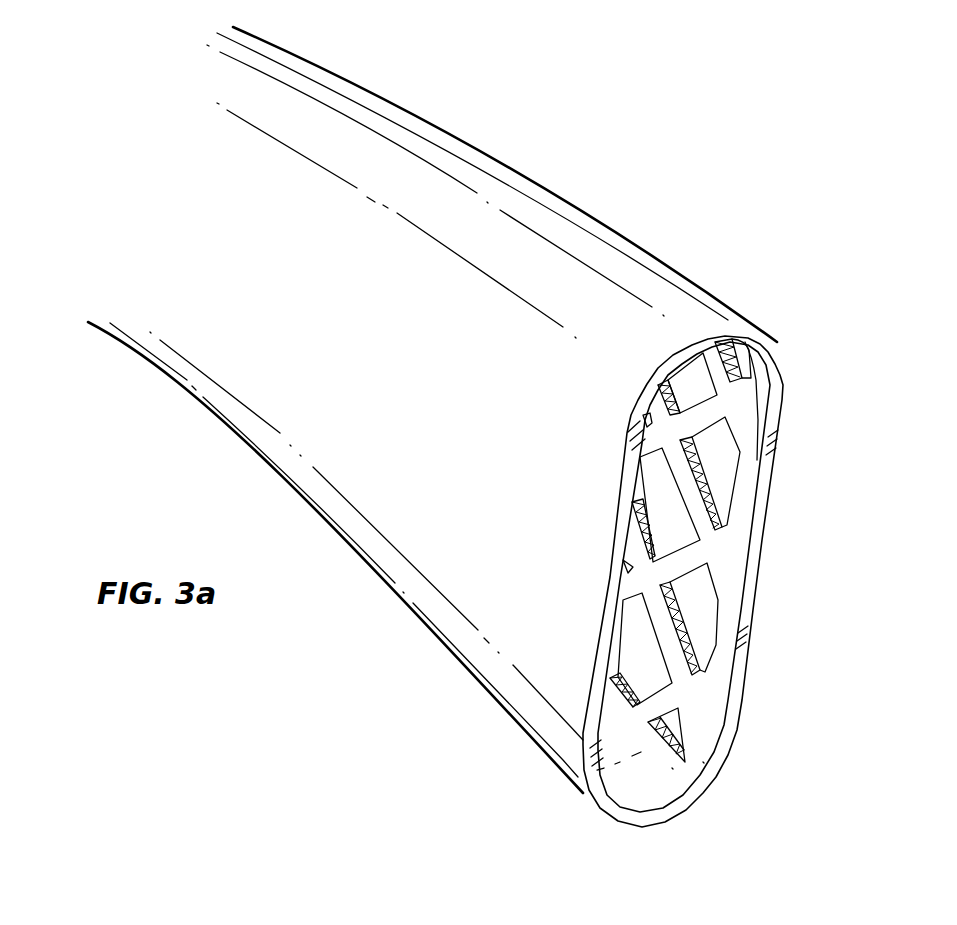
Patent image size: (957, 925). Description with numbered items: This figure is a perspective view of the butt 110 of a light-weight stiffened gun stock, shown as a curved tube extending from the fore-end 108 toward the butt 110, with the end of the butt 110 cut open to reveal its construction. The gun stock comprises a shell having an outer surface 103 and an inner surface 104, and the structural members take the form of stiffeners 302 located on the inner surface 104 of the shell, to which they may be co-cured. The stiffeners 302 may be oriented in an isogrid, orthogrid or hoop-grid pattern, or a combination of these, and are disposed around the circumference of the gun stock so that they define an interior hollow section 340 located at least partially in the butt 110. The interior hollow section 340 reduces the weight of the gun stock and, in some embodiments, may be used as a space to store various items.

The outer surface 103 is at (697, 337).
The inner surface 104 is at (713, 442).
The fore-end 108 is at (372, 145).
The butt 110 is at (767, 515).
The stiffeners 302 is at (673, 643).
The interior hollow section 340 is at (775, 647).